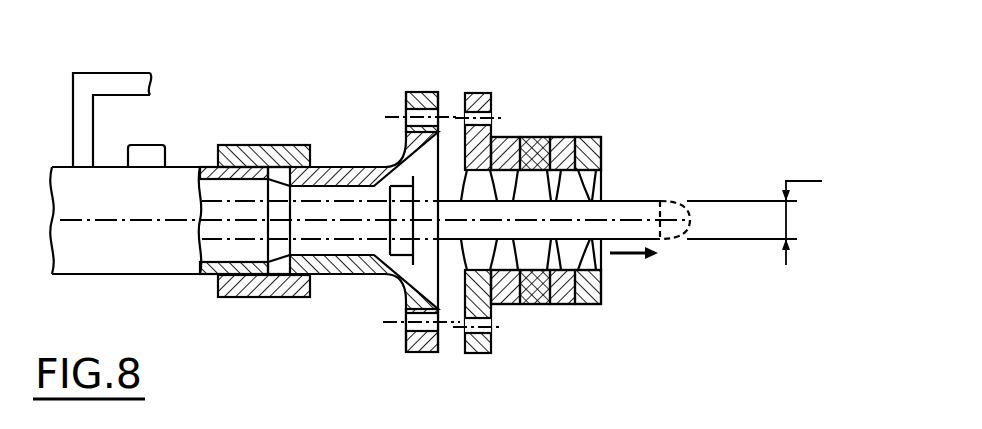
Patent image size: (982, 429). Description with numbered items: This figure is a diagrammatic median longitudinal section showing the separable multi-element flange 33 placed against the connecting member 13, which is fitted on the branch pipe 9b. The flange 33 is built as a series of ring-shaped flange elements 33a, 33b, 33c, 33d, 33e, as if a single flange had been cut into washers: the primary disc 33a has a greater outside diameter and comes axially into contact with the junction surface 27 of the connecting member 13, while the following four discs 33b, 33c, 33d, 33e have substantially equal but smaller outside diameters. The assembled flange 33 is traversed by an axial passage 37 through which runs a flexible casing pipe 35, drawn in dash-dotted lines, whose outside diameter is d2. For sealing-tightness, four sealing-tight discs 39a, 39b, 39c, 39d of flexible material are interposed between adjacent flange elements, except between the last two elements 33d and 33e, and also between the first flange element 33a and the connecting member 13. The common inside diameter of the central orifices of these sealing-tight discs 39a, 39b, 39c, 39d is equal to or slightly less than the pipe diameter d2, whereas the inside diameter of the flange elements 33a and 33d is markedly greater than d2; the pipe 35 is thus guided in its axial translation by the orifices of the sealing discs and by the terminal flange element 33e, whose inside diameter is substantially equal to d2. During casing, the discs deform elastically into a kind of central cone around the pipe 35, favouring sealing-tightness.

The branch pipe 9b is at (120, 78).
The connecting member 13 is at (370, 281).
The gasket junction surface 27 is at (441, 303).
The separable multi-element flange 33 is at (542, 314).
The primary disc 33a is at (483, 93).
The flange element 33b is at (510, 312).
The flange element 33c is at (533, 143).
The flange element 33d is at (600, 153).
The terminal flange element 33e is at (597, 307).
The casing pipe 35 is at (712, 208).
The axial passage 37 is at (600, 192).
The sealing-tight disc 39a is at (601, 287).
The sealing-tight disc 39b is at (573, 143).
The sealing-tight disc 39c is at (514, 143).
The sealing-tight disc 39d is at (457, 150).
The outside diameter of the casing pipe d2 is at (802, 205).